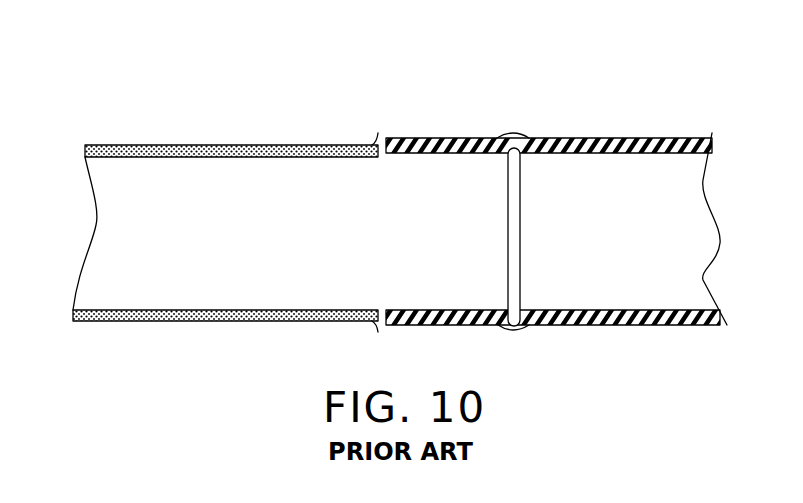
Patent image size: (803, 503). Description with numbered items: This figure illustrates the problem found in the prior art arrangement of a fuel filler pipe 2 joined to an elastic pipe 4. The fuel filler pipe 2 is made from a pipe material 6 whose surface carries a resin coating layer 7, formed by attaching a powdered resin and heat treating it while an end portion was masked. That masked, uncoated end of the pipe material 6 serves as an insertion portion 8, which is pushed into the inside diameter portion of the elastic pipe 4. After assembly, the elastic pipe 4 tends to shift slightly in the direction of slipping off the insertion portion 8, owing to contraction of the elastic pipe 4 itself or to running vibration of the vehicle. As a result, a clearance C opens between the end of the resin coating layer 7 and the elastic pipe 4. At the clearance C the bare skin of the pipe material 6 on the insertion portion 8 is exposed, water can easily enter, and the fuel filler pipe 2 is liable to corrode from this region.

The fuel filler pipe 2 is at (215, 193).
The elastic pipe 4 is at (534, 137).
The pipe material 6 is at (190, 173).
The resin coating layer 7 is at (250, 145).
The insertion portion 8 is at (380, 198).
The clearance C is at (380, 218).